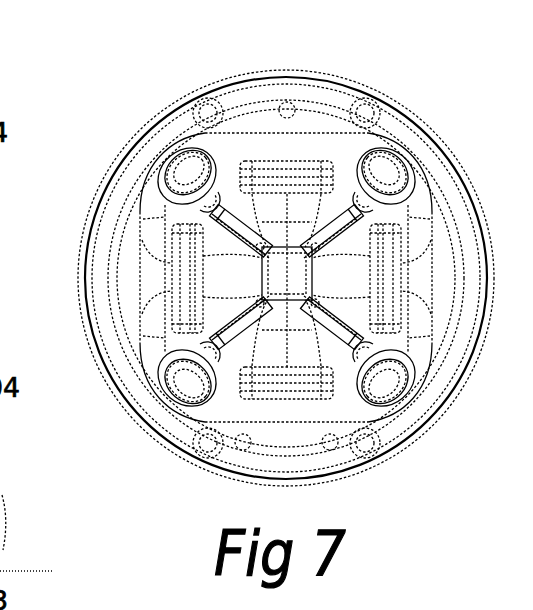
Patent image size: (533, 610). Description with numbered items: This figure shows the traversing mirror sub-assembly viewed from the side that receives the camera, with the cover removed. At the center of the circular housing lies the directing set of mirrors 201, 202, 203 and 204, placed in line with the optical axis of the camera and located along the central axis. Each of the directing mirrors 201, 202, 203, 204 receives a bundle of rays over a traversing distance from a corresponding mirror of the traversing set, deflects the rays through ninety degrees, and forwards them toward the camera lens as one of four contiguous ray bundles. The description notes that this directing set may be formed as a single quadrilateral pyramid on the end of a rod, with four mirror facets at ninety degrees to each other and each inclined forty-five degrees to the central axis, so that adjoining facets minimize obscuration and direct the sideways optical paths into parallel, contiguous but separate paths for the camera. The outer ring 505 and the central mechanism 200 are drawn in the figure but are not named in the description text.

The outer housing ring 505 is at (304, 72).
The central coupling mechanism 200 is at (312, 287).
The mirror of the directing set 201 is at (382, 172).
The mirror of the directing set 202 is at (386, 372).
The mirror of the directing set 203 is at (215, 400).
The mirror of the directing set 204 is at (184, 174).